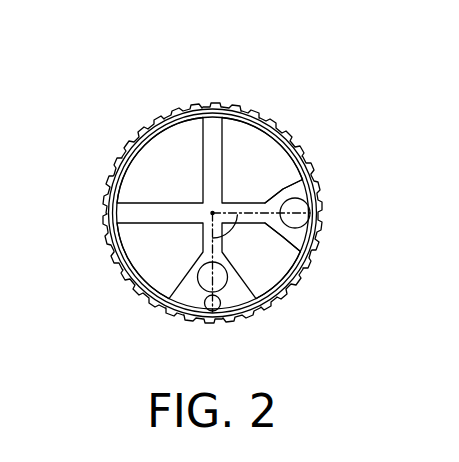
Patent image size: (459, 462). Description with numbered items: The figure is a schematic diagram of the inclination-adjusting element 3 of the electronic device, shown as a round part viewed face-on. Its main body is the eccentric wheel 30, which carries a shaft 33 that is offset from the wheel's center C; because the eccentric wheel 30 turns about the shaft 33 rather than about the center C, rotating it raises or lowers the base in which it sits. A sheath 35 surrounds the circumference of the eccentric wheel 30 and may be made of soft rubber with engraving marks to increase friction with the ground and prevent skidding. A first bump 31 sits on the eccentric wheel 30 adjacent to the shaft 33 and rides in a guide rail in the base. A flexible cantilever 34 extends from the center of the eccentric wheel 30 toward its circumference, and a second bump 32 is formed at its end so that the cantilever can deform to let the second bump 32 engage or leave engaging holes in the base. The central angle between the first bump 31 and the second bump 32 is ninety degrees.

The inclination-adjusting element 3 is at (125, 57).
The eccentric wheel 30 is at (260, 132).
The first bump 31 is at (219, 316).
The second bump 32 is at (310, 215).
The shaft 33 is at (200, 282).
The flexible cantilever 34 is at (296, 193).
The sheath 35 is at (122, 145).
The center of the eccentric wheel C is at (212, 213).